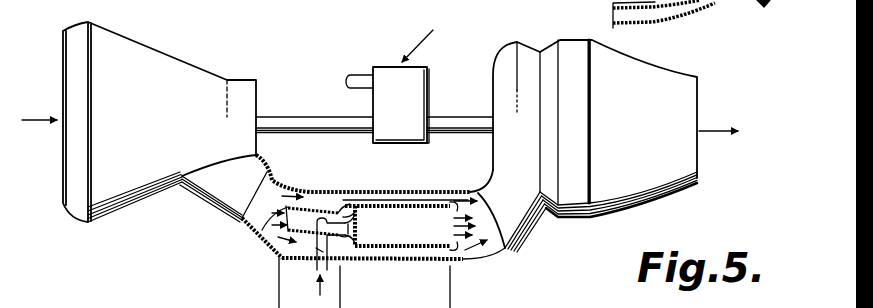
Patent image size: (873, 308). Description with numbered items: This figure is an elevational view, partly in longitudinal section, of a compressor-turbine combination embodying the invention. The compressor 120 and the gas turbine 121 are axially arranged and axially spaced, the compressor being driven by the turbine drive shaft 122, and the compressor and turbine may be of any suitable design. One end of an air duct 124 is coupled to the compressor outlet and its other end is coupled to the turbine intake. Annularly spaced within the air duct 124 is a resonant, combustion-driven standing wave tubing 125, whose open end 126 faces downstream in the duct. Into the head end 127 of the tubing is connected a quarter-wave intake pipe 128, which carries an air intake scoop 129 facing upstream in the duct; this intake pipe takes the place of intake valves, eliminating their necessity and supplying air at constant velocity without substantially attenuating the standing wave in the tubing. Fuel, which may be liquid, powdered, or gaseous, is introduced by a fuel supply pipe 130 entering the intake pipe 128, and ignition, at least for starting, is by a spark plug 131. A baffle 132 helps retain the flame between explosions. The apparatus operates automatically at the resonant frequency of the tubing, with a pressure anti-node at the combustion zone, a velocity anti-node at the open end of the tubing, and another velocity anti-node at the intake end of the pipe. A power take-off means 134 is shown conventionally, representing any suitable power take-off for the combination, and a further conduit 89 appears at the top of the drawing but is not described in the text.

The compressor 120 is at (203, 80).
The gas turbine 121 is at (663, 80).
The turbine drive shaft 122 is at (322, 93).
The air duct 124 is at (305, 190).
The standing wave tubing 125 is at (405, 203).
The open end 126 is at (453, 252).
The head end 127 is at (339, 245).
The quarter-wave intake pipe 128 is at (303, 238).
The air intake scoop 129 is at (253, 228).
The fuel supply pipe 130 is at (316, 250).
The spark plug 131 is at (349, 201).
The baffle 132 is at (355, 230).
The power take-off means 134 is at (427, 107).
The conduit 89 is at (613, 12).